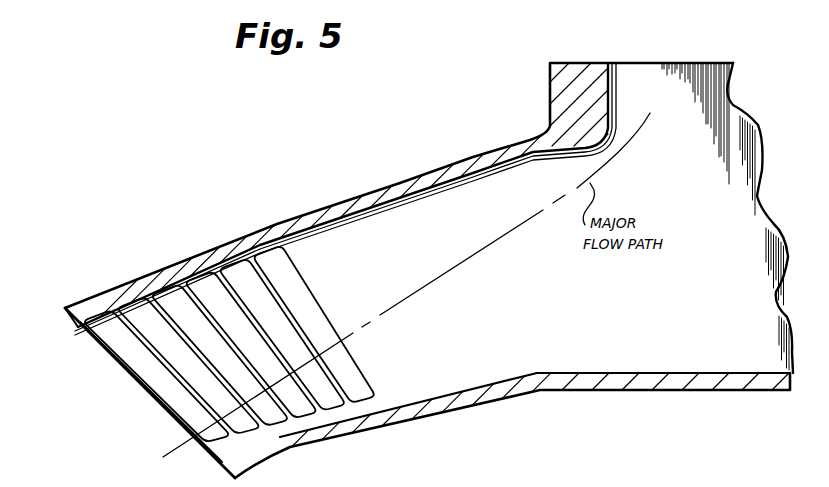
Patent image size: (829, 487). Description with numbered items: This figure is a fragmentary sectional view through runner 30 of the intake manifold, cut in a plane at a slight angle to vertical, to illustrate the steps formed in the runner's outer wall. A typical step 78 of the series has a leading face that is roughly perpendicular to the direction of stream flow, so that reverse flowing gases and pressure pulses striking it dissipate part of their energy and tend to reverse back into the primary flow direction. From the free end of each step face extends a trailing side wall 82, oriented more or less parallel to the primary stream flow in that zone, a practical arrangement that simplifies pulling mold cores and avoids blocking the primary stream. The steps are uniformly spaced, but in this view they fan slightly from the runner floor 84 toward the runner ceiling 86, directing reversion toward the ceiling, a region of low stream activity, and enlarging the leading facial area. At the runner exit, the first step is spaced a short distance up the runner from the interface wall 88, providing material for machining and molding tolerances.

The runner 30 is at (453, 160).
The runner ceiling 86 is at (484, 172).
The step 78 is at (163, 294).
The trailing side wall 82 is at (200, 327).
The interface wall 88 is at (72, 318).
The runner floor 84 is at (452, 391).